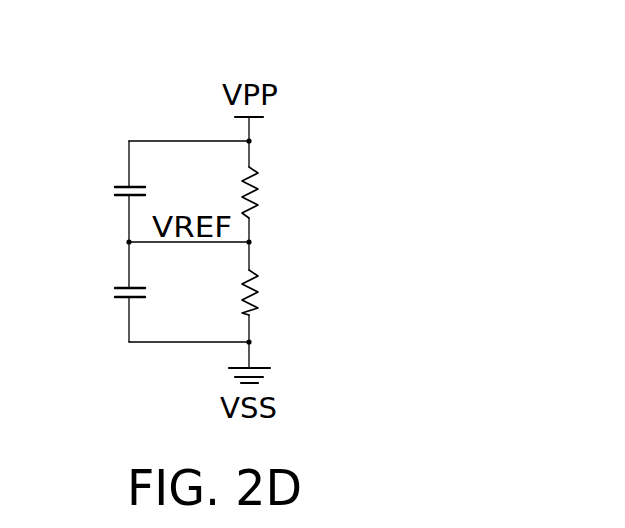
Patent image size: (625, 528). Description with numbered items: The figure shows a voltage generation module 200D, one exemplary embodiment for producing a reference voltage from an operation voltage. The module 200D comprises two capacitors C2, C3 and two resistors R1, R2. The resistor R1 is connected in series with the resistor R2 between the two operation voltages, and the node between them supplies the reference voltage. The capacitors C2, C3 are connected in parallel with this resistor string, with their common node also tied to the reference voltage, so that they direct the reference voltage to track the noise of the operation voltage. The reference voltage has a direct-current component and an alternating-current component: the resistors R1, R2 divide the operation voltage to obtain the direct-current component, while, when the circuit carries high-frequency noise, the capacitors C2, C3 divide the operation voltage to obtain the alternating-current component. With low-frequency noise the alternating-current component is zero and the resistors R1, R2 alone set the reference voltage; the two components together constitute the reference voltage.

The voltage generation module 200D is at (385, 103).
The capacitor C2 is at (115, 191).
The capacitor C3 is at (115, 291).
The resistor R1 is at (260, 190).
The resistor R2 is at (260, 290).